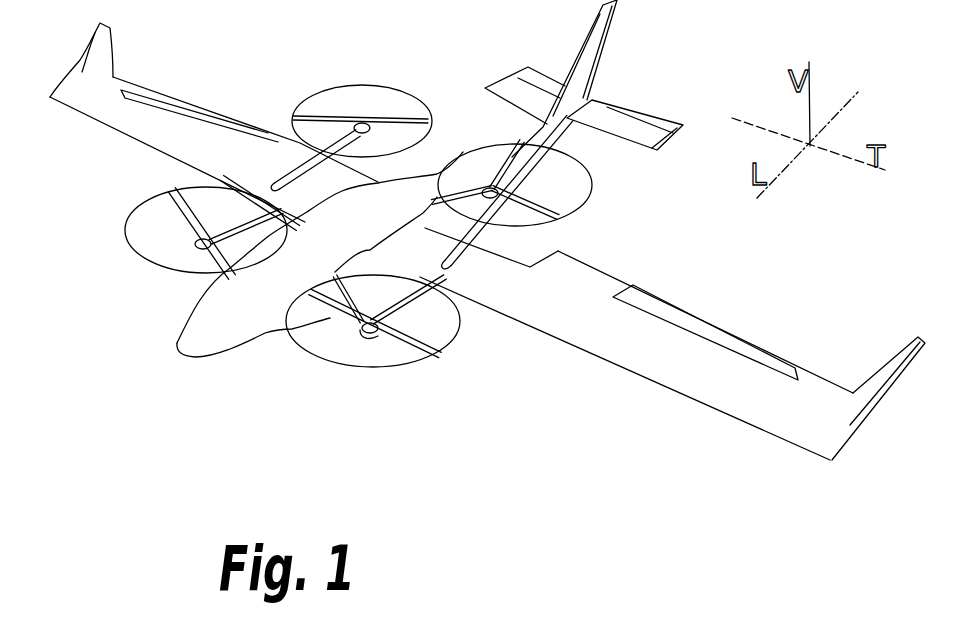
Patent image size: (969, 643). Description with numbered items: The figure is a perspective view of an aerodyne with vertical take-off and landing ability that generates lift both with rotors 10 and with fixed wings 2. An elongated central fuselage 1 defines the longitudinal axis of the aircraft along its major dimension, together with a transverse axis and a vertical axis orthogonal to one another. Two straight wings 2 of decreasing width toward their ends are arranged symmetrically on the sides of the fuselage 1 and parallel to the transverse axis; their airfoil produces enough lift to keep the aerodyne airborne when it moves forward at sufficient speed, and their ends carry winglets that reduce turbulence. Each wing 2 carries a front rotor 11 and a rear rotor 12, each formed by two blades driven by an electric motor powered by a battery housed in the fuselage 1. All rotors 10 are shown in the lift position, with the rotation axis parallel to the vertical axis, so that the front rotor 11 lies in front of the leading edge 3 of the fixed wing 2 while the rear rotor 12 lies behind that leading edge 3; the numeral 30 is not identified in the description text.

The fuselage 1 is at (197, 345).
The fixed wing 2 is at (157, 130).
The leading edge 3 is at (90, 122).
The flap / control surface 30 is at (187, 108).
The rotor 10 is at (358, 204).
The front rotor 11 is at (336, 276).
The rear rotor 12 is at (344, 105).